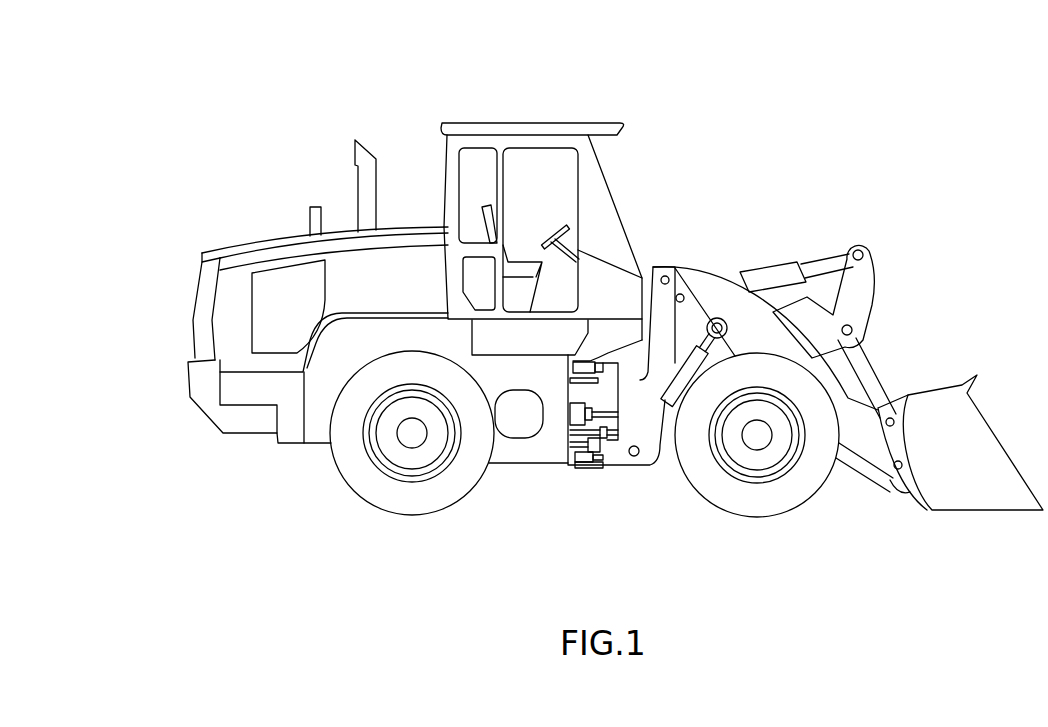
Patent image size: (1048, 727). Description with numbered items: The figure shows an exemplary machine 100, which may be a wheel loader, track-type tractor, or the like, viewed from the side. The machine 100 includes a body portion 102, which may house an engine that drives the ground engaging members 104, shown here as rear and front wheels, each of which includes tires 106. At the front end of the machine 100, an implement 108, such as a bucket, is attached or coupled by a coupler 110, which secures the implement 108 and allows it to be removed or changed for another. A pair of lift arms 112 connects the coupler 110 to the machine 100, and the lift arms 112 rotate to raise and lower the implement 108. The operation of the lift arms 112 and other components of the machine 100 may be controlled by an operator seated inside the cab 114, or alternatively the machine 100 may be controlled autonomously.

The machine 100 is at (334, 111).
The body portion 102 is at (250, 415).
The ground engaging members 104 is at (430, 450).
The tires 106 is at (443, 507).
The implement 108 is at (990, 425).
The coupler 110 is at (902, 481).
The lift arms 112 is at (723, 305).
The cab 114 is at (526, 128).